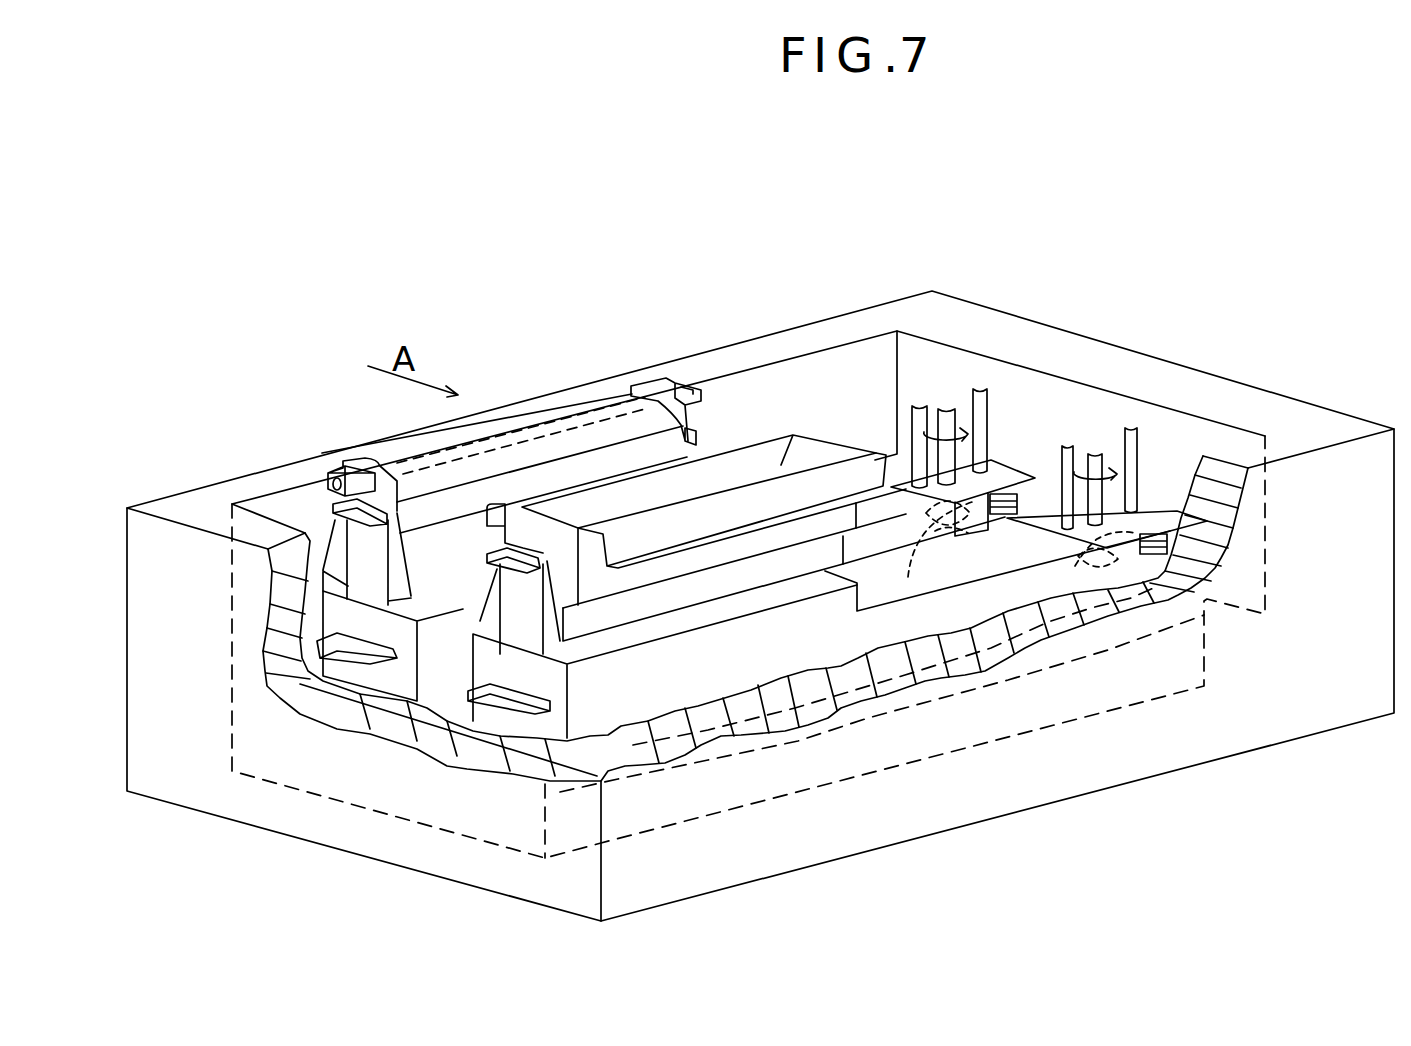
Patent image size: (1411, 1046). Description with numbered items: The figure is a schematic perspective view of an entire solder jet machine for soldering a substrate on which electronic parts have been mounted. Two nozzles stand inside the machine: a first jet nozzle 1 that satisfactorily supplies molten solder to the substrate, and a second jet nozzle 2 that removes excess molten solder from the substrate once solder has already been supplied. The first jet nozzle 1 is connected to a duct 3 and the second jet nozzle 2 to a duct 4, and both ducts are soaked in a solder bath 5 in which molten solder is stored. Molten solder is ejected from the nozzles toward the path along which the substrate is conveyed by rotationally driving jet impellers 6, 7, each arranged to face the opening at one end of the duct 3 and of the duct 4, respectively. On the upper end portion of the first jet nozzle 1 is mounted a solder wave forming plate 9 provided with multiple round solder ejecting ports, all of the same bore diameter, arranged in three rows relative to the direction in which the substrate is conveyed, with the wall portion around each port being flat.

The first jet nozzle 1 is at (570, 368).
The second jet nozzle 2 is at (835, 418).
The duct for the first nozzle 3 is at (433, 677).
The duct for the second nozzle 4 is at (797, 648).
The solder bath 5 is at (1238, 733).
The jet impeller 6 is at (910, 566).
The jet impeller 7 is at (1075, 565).
The solder wave forming plate 9 is at (520, 425).